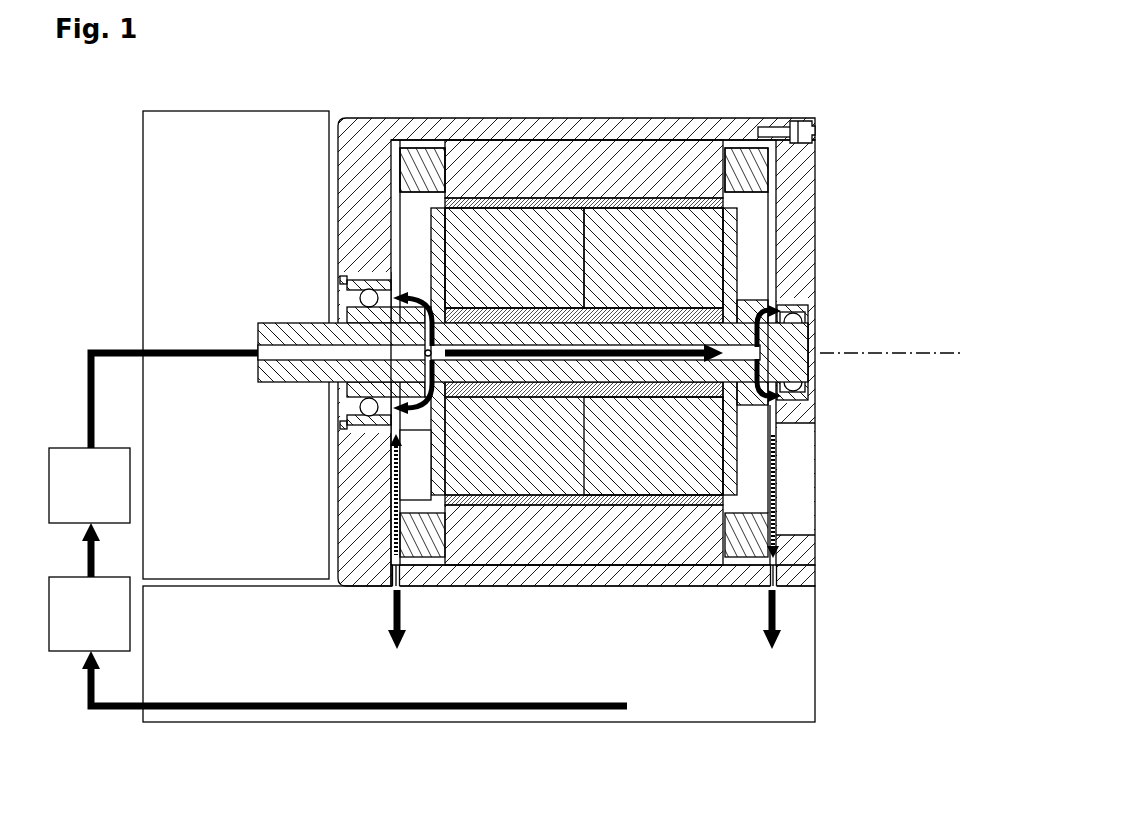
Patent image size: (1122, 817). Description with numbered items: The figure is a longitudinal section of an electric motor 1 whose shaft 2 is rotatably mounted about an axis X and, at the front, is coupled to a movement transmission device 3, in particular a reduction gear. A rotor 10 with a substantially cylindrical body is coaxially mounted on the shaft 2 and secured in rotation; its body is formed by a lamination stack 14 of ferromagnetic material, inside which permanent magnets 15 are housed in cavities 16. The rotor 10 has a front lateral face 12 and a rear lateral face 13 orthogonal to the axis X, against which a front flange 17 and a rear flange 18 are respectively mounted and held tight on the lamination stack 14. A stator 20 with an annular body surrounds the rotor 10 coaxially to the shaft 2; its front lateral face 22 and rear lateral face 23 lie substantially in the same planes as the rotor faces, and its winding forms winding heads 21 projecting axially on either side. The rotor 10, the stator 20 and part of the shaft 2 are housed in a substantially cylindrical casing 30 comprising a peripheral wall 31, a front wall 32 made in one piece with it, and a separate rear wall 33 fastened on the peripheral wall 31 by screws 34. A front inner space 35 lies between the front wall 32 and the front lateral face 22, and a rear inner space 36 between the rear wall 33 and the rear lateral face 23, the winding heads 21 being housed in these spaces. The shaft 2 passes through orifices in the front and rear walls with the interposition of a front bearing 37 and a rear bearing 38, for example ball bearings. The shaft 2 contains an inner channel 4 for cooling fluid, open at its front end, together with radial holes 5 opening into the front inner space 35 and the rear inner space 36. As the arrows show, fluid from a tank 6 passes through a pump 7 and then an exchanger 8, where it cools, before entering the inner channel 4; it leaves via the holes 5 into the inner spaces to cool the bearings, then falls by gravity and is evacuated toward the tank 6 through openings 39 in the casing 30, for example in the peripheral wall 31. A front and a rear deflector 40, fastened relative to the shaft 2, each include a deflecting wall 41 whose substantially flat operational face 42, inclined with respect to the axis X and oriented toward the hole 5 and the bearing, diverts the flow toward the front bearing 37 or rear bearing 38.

The electric motor 1 is at (662, 96).
The shaft 2 is at (532, 310).
The movement transmission device 3 is at (225, 208).
The inner channel 4 is at (612, 402).
The hole 5 is at (447, 300).
The tank 6 is at (550, 649).
The pump 7 is at (82, 633).
The exchanger 8 is at (82, 505).
The rotor 10 is at (812, 251).
The front lateral face 12 is at (458, 234).
The rear lateral face 13 is at (720, 250).
The lamination stack 14 is at (762, 436).
The permanent magnets 15 is at (604, 283).
The cavities 16 is at (642, 283).
The front flange 17 is at (398, 524).
The rear flange 18 is at (720, 482).
The stator 20 is at (590, 165).
The winding heads 21 is at (416, 160).
The front lateral face 22 is at (458, 165).
The rear lateral face 23 is at (712, 165).
The casing 30 is at (384, 116).
The peripheral wall 31 is at (668, 578).
The front wall 32 is at (366, 578).
The rear wall 33 is at (790, 228).
The screws 34 is at (797, 125).
The front inner space 35 is at (430, 478).
The rear inner space 36 is at (766, 471).
The front bearing 37 is at (372, 278).
The rear bearing 38 is at (795, 418).
The openings 39 is at (420, 574).
The deflector 40 is at (400, 462).
The deflecting wall 41 is at (798, 284).
The operational face 42 is at (792, 312).
The axis X is at (884, 353).